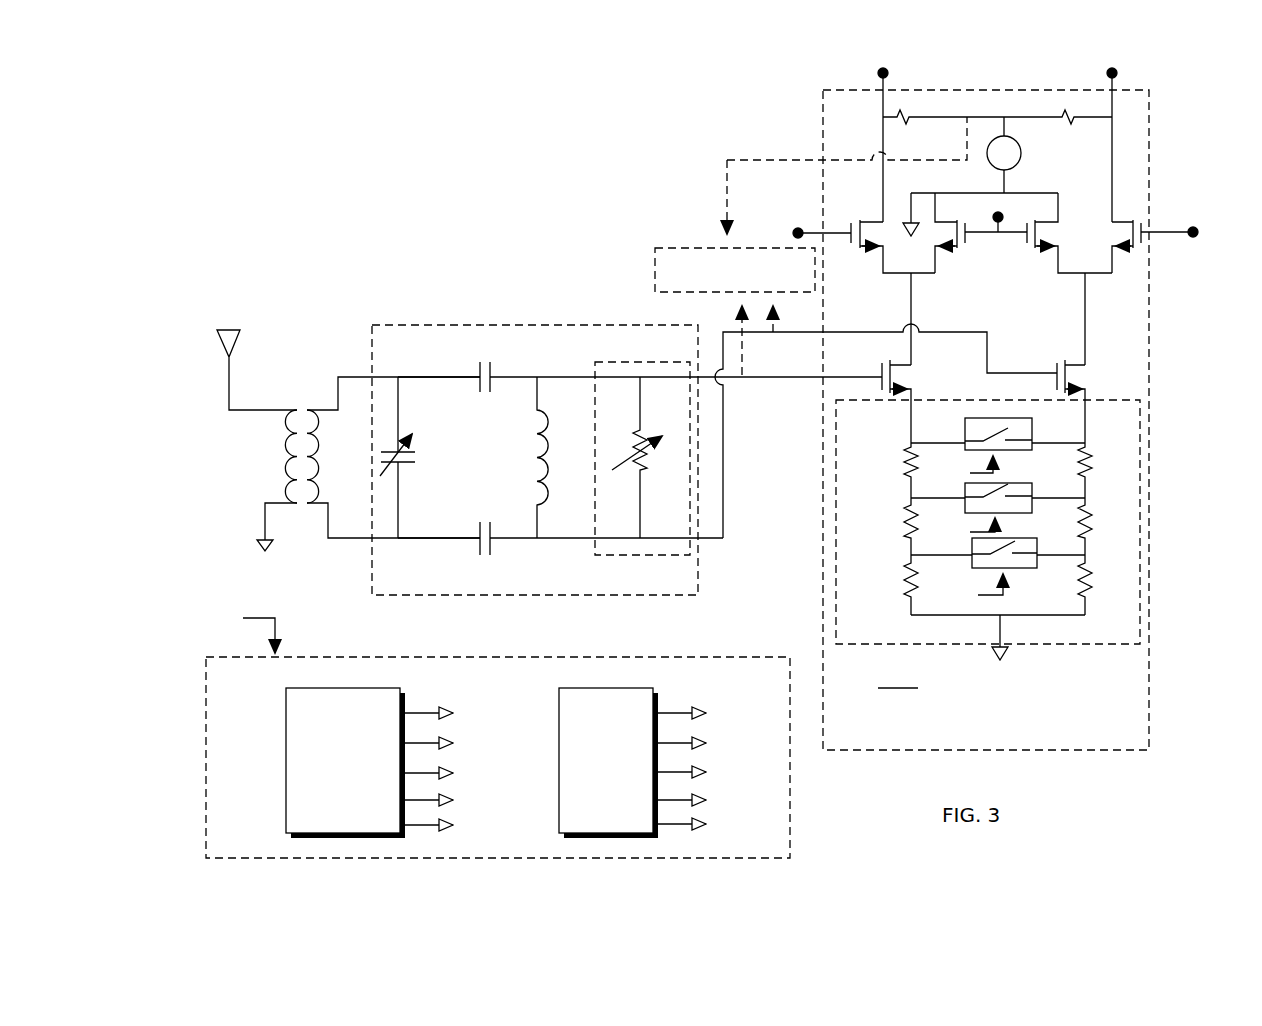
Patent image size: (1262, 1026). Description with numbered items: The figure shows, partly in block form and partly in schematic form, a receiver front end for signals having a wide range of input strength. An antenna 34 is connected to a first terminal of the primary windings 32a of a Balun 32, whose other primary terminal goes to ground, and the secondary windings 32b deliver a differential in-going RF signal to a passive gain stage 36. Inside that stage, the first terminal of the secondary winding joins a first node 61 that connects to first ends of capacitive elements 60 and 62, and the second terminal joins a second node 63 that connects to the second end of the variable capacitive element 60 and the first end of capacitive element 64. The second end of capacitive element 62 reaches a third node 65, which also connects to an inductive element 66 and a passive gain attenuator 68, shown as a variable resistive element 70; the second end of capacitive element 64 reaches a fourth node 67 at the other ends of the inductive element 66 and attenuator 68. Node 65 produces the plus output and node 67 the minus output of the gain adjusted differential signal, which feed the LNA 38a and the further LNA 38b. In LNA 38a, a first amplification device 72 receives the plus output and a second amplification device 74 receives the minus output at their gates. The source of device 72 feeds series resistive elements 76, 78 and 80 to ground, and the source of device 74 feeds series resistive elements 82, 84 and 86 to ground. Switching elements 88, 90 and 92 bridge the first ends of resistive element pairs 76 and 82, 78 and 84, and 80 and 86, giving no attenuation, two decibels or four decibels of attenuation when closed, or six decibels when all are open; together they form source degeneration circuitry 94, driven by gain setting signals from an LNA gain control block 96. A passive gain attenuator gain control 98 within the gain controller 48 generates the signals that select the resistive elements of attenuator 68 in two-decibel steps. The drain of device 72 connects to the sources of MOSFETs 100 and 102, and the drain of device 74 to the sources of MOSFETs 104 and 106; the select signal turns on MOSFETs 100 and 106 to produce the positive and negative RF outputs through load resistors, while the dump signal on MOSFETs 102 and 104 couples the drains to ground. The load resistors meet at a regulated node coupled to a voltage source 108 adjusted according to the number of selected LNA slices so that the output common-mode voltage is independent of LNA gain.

The Balun 32 is at (353, 486).
The primary windings 32a is at (290, 478).
The secondary windings 32b is at (319, 426).
The antenna 34 is at (232, 412).
The passive gain stage 36 is at (513, 599).
The LNA 38a is at (896, 752).
The LNA 38b is at (811, 246).
The gain controller 48 is at (206, 772).
The capacitive element 60 is at (412, 463).
The first node 61 is at (438, 374).
The capacitive element 62 is at (480, 394).
The second node 63 is at (436, 544).
The capacitive element 64 is at (480, 556).
The third node 65 is at (564, 376).
The inductive element 66 is at (533, 503).
The fourth node 67 is at (566, 538).
The passive gain attenuator 68 is at (632, 560).
The variable resistive element 70 is at (642, 472).
The first amplification device 72 is at (912, 368).
The second amplification device 74 is at (1056, 367).
The resistive element 76 is at (906, 481).
The resistive element 78 is at (906, 541).
The resistive element 80 is at (906, 600).
The resistive element 82 is at (1087, 480).
The resistive element 84 is at (1087, 541).
The resistive element 86 is at (1087, 600).
The switching element 88 is at (1028, 452).
The switching element 90 is at (1028, 515).
The switching element 92 is at (1033, 570).
The source degeneration circuitry 94 is at (1090, 652).
The LNA gain control block 96 is at (559, 795).
The passive gain attenuator gain control 98 is at (285, 735).
The MOSFET 100 is at (850, 245).
The MOSFET 102 is at (966, 245).
The MOSFET 104 is at (1026, 245).
The MOSFET 106 is at (1142, 245).
The voltage source 108 is at (987, 165).